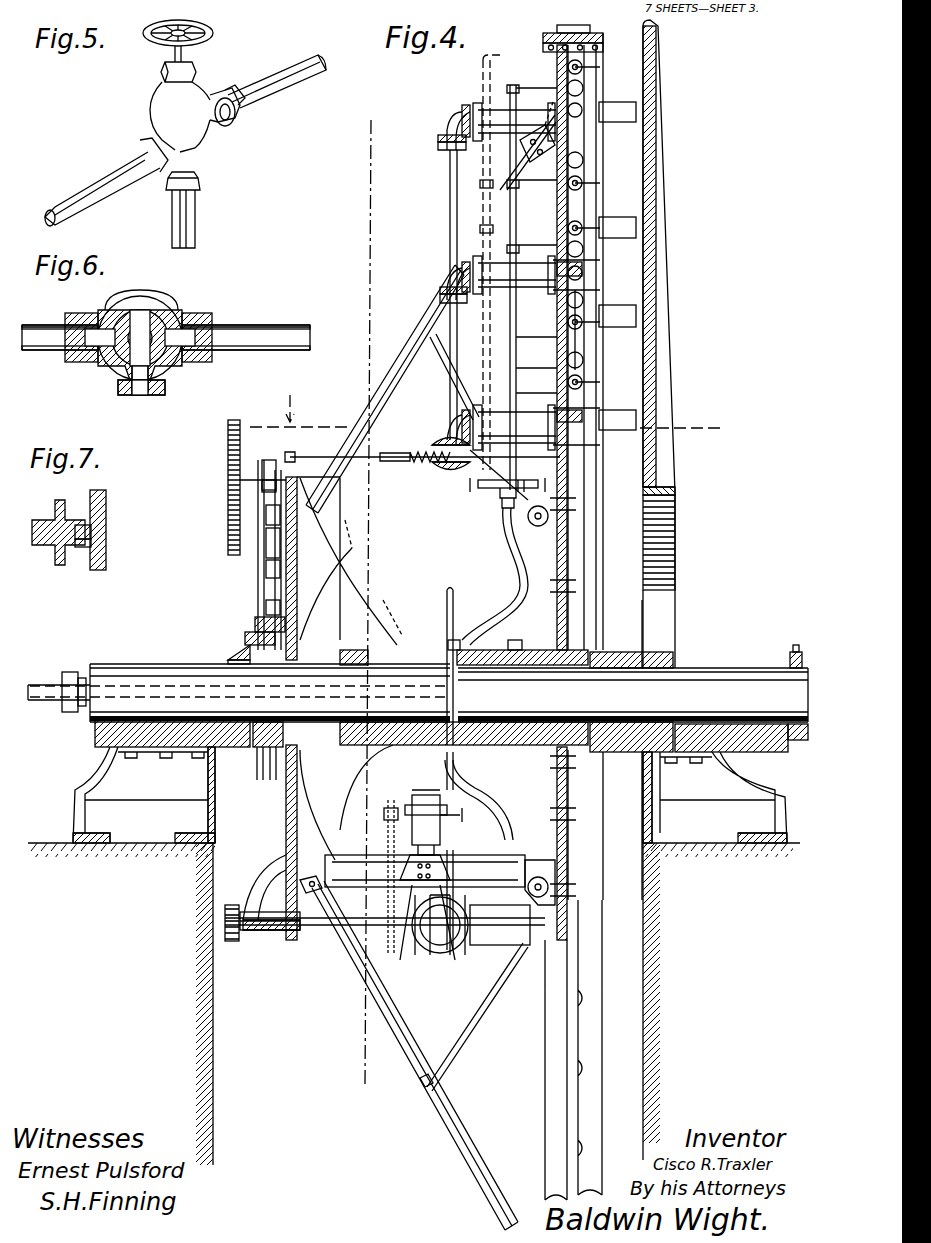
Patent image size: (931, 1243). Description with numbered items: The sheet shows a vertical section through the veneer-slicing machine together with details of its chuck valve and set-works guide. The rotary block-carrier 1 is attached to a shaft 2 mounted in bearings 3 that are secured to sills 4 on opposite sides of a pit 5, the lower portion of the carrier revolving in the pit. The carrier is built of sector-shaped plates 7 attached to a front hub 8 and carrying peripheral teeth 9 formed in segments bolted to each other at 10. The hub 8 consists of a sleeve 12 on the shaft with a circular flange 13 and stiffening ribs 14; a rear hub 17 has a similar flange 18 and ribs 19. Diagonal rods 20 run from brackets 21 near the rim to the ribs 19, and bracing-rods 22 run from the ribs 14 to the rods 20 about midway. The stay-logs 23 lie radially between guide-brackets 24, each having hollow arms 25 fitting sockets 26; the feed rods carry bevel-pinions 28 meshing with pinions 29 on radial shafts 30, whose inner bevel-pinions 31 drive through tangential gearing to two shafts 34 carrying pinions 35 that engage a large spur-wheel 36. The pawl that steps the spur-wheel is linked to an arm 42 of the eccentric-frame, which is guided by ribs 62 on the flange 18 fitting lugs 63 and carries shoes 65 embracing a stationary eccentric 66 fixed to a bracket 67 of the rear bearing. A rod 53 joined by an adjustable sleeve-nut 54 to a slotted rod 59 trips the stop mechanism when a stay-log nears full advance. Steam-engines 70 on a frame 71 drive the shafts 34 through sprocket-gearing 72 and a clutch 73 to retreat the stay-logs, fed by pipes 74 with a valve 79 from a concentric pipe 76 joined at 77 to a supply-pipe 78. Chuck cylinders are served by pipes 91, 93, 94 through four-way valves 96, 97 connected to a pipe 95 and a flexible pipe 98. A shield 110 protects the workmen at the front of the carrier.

In FIG. 4, the rotary block-carrier 1 is at (568, 525).
In FIG. 4, the shaft 2 is at (728, 683).
In FIG. 4, the bearings 3 is at (800, 768).
In FIG. 4, the sills 4 is at (75, 790).
In FIG. 4, the pit 5 is at (414, 958).
In FIG. 4, the sector-shaped plates 7 is at (258, 580).
In FIG. 4, the hub 8 is at (585, 466).
In FIG. 4, the teeth 9 is at (560, 29).
In FIG. 4, the bolted joints of toothed segments 10 is at (545, 48).
In FIG. 4, the sleeve 12 is at (540, 745).
In FIG. 4, the circular flange 13 is at (565, 548).
In FIG. 4, the ribs 14 is at (525, 812).
In FIG. 4, the rear hub 17 is at (385, 560).
In FIG. 4, the flange 18 is at (290, 547).
In FIG. 7, the flange 18 is at (106, 484).
In FIG. 4, the ribs 19 is at (351, 561).
In FIG. 4, the diagonal rods 20 is at (410, 335).
In FIG. 4, the brackets 21 is at (536, 165).
In FIG. 4, the bracing-rods 22 is at (444, 360).
In FIG. 4, the stay-logs 23 is at (590, 144).
In FIG. 4, the guide-brackets 24 is at (618, 104).
In FIG. 4, the hollow arms 25 is at (585, 272).
In FIG. 4, the cylindrical sockets 26 is at (500, 115).
In FIG. 4, the bevel-pinion 28 is at (462, 112).
In FIG. 4, the pinion 29 is at (438, 138).
In FIG. 4, the radial shafts 30 is at (450, 187).
In FIG. 4, the bevel-pinion 31 is at (440, 470).
In FIG. 4, the shafts 34 is at (324, 928).
In FIG. 4, the pinion 35 is at (235, 941).
In FIG. 4, the spur-wheel 36 is at (228, 455).
In FIG. 7, the radially-projecting arm 42 is at (58, 545).
In FIG. 4, the rod 53 is at (300, 457).
In FIG. 4, the adjustable sleeve-nut 54 is at (395, 457).
In FIG. 4, the rod 59 is at (509, 488).
In FIG. 4, the ribs 62 is at (270, 605).
In FIG. 7, the ribs 62 is at (100, 519).
In FIG. 4, the lugs 63 is at (272, 514).
In FIG. 7, the lugs 63 is at (82, 548).
In FIG. 4, the shoe 65 is at (255, 622).
In FIG. 4, the eccentric 66 is at (248, 635).
In FIG. 4, the bracket 67 is at (240, 650).
In FIG. 4, the rotary steam-engines 70 is at (425, 795).
In FIG. 4, the frame 71 is at (440, 880).
In FIG. 4, the sprocket-gearing 72 is at (385, 866).
In FIG. 4, the clutch mechanism 73 is at (388, 810).
In FIG. 4, the pipes 74 is at (455, 798).
In FIG. 4, the pipe 76 is at (156, 690).
In FIG. 4, the connection 77 is at (70, 708).
In FIG. 4, the supply-pipe 78 is at (44, 696).
In FIG. 4, the valve 79 is at (460, 785).
In FIG. 4, the supply-pipe 91 is at (510, 348).
In FIG. 4, the pipe 93 is at (483, 75).
In FIG. 5, the pipe 93 is at (92, 180).
In FIG. 6, the pipe 93 is at (68, 326).
In FIG. 5, the pipe 94 is at (276, 68).
In FIG. 6, the pipe 94 is at (237, 330).
In FIG. 4, the pipe 95 is at (498, 503).
In FIG. 5, the pipe 95 is at (186, 213).
In FIG. 4, the four-way valve 96 is at (486, 490).
In FIG. 5, the four-way valve 96 is at (178, 112).
In FIG. 6, the four-way valve 96 is at (151, 334).
In FIG. 4, the four-way valve 97 is at (521, 492).
In FIG. 4, the flexible pipe 98 is at (515, 560).
In FIG. 4, the shield or fender 110 is at (656, 362).